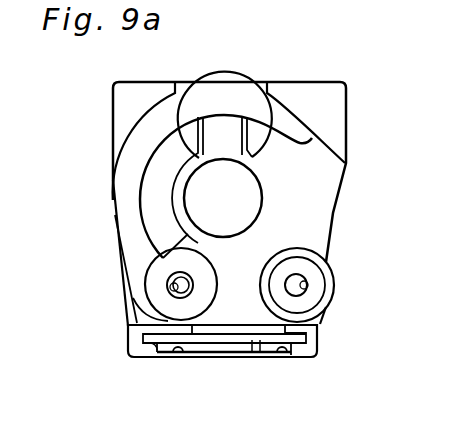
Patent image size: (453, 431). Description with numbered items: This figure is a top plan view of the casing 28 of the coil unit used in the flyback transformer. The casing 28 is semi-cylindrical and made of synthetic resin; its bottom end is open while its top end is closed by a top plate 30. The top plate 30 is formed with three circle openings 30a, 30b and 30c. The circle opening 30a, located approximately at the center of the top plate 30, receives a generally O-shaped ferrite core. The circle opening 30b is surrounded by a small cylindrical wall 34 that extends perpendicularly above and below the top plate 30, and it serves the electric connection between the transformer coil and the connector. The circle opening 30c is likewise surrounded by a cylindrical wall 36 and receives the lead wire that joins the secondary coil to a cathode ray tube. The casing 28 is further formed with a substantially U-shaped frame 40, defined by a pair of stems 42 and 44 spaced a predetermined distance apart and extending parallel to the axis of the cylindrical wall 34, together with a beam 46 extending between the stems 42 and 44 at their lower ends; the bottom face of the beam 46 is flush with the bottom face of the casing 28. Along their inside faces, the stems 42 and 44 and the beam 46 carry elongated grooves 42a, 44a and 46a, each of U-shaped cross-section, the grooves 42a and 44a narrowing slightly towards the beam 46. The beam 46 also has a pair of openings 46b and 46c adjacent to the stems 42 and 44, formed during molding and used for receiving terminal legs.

The casing 28 is at (229, 78).
The top plate 30 is at (317, 175).
The circle opening 30a is at (247, 165).
The circle opening 30b is at (170, 288).
The circle opening 30c is at (306, 287).
The cylindrical wall 34 is at (170, 272).
The cylindrical wall 36 is at (325, 271).
The U-shaped frame 40 is at (128, 333).
The stem 42 is at (135, 354).
The elongated groove 42a is at (158, 354).
The stem 44 is at (320, 357).
The elongated groove 44a is at (316, 333).
The beam 46 is at (217, 351).
The elongated groove 46a is at (251, 340).
The opening 46b is at (180, 352).
The opening 46c is at (288, 348).